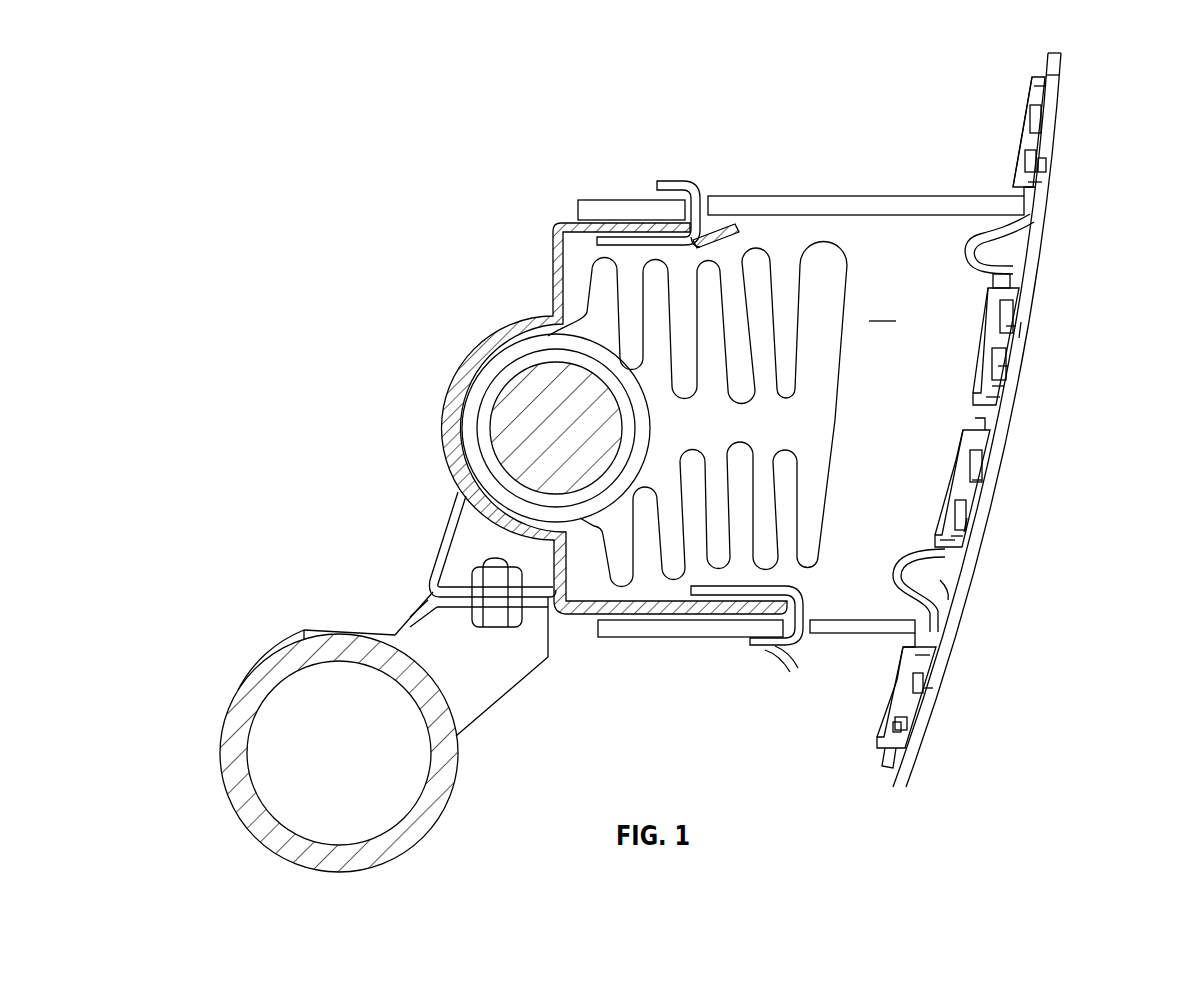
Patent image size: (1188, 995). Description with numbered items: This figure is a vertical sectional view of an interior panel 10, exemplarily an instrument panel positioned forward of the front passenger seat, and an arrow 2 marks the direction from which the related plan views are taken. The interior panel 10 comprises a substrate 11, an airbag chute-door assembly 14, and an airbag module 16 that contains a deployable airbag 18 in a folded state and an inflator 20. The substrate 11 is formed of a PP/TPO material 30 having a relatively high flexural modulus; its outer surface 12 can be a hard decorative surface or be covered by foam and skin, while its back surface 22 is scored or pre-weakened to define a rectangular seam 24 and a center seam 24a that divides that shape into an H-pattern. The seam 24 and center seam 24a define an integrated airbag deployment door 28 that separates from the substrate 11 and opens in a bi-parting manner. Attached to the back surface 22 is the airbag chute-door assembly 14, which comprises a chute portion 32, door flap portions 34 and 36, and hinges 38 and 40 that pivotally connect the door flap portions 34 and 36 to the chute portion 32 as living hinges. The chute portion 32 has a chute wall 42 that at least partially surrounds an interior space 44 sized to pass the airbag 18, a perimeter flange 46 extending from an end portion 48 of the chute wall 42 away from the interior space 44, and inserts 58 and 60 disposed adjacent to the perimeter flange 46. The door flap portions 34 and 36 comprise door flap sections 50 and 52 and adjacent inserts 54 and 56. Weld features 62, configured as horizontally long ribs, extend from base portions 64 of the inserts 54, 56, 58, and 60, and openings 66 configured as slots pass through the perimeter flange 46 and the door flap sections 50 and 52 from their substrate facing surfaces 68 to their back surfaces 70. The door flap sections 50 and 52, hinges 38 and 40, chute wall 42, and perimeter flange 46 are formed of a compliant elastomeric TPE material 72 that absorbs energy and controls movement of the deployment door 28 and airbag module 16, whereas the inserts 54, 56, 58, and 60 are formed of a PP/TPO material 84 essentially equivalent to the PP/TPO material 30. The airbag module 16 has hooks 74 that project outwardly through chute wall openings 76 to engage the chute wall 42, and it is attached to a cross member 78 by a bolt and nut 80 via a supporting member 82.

The interior panel 10 is at (334, 110).
The arrow 2 is at (1100, 425).
The substrate 11 is at (1035, 250).
The outer surface 12 is at (924, 725).
The airbag chute-door assembly 14 is at (880, 196).
The airbag module 16 is at (481, 347).
The airbag 18 is at (842, 395).
The inflator 20 is at (489, 430).
The back surface 22 is at (954, 592).
The seam 24 is at (1038, 218).
The center seam 24a is at (1003, 425).
The integrated airbag deployment door 28 is at (1028, 330).
The PP/TPO material 30 is at (934, 690).
The chute portion 32 is at (947, 212).
The door flap portion 34 is at (1008, 370).
The door flap portion 36 is at (979, 483).
The hinge 38 is at (962, 256).
The hinge 40 is at (899, 546).
The chute wall 42 is at (778, 210).
The interior space 44 is at (882, 306).
The perimeter flange 46 is at (1048, 165).
The end portion 48 is at (1014, 196).
The door flap section 50 is at (1014, 330).
The door flap section 52 is at (932, 522).
The insert 54 is at (982, 337).
The insert 56 is at (946, 496).
The insert 58 is at (1031, 95).
The insert 60 is at (879, 745).
The weld features 62 is at (1057, 103).
The base portions 64 is at (1025, 122).
The openings 66 is at (1046, 182).
The substrate facing surfaces 68 is at (1052, 80).
The back surfaces 70 is at (1042, 58).
The TPE material 72 is at (836, 210).
The hooks 74 is at (662, 181).
The chute wall openings 76 is at (712, 222).
The cross member 78 is at (258, 680).
The bolt and nut 80 is at (497, 630).
The supporting member 82 is at (449, 533).
The PP/TPO material 84 is at (1027, 140).